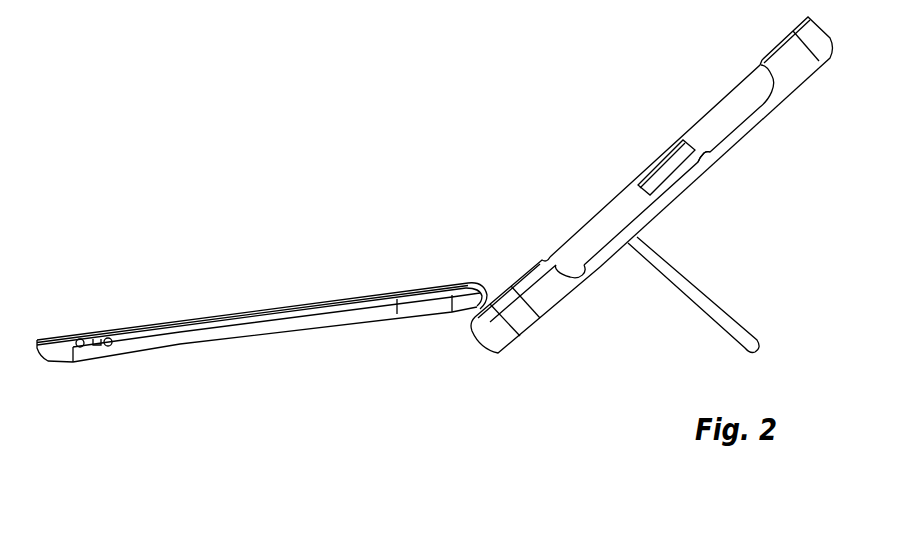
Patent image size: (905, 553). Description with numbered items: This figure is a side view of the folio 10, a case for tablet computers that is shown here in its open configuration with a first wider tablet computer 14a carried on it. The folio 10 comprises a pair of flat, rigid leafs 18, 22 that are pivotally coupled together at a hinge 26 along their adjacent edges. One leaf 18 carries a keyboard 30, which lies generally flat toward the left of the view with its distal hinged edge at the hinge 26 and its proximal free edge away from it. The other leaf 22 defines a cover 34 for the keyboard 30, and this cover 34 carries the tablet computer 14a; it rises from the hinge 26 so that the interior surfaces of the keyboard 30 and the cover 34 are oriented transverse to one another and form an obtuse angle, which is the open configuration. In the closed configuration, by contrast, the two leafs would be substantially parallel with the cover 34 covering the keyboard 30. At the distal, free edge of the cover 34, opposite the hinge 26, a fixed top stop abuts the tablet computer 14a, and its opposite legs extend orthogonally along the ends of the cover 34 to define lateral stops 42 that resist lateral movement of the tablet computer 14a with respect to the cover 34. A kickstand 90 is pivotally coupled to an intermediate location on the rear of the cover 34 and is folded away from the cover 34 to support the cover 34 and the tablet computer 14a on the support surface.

The folio 10 is at (579, 341).
The first wider tablet computer 14a is at (613, 199).
The leaf 18 is at (200, 343).
The leaf 22 is at (760, 127).
The hinge 26 is at (442, 317).
The keyboard 30 is at (222, 317).
The cover 34 is at (703, 164).
The lateral stops 42 is at (779, 50).
The kickstand 90 is at (680, 286).